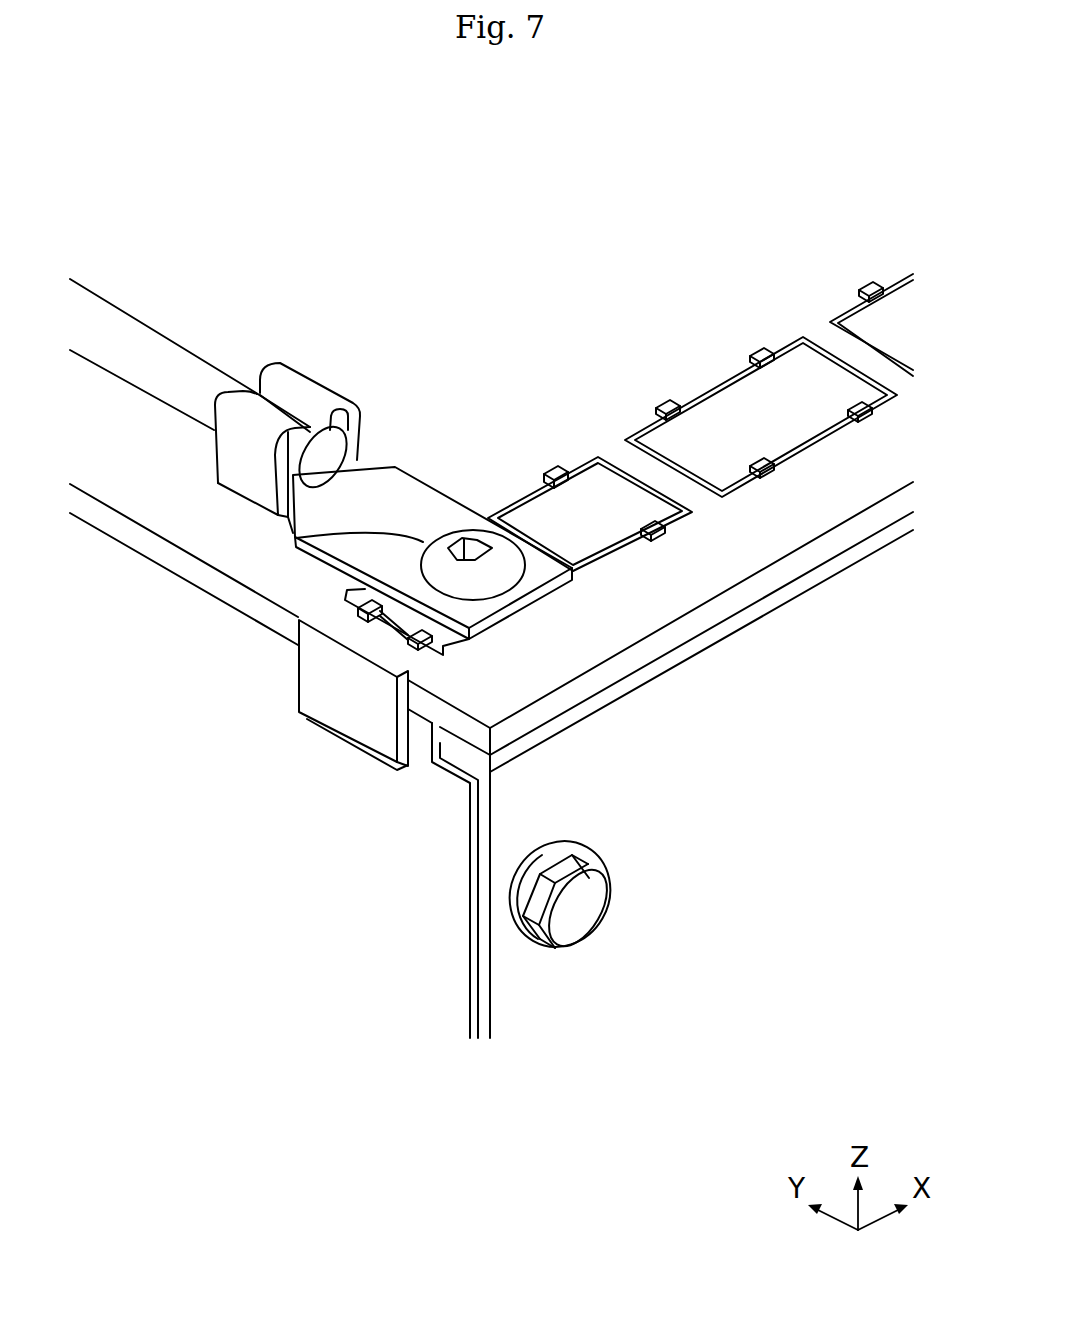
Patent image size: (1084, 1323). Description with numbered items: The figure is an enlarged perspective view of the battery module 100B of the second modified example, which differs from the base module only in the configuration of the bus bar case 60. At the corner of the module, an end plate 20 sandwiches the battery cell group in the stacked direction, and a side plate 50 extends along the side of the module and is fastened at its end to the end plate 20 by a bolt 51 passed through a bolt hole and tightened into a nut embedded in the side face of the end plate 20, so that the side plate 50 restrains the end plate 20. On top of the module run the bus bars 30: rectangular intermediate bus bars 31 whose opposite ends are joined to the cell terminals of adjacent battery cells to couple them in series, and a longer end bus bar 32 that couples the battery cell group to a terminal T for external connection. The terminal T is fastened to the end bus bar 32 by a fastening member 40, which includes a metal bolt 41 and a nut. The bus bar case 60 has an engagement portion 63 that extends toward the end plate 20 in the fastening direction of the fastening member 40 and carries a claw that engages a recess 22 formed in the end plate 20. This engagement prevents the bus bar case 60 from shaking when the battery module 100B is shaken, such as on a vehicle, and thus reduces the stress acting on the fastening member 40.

The battery module 100B is at (216, 172).
The end plate 20 is at (145, 660).
The recess 22 is at (367, 750).
The bus bar 30 is at (700, 422).
The intermediate bus bar 31 is at (728, 422).
The end bus bar 32 is at (587, 495).
The fastening member 40 is at (269, 461).
The bolt 41 is at (306, 548).
The side plate 50 is at (724, 792).
The bolt 51 is at (580, 913).
The bus bar case 60 is at (149, 445).
The engagement portion 63 is at (326, 696).
The terminal T is at (398, 500).